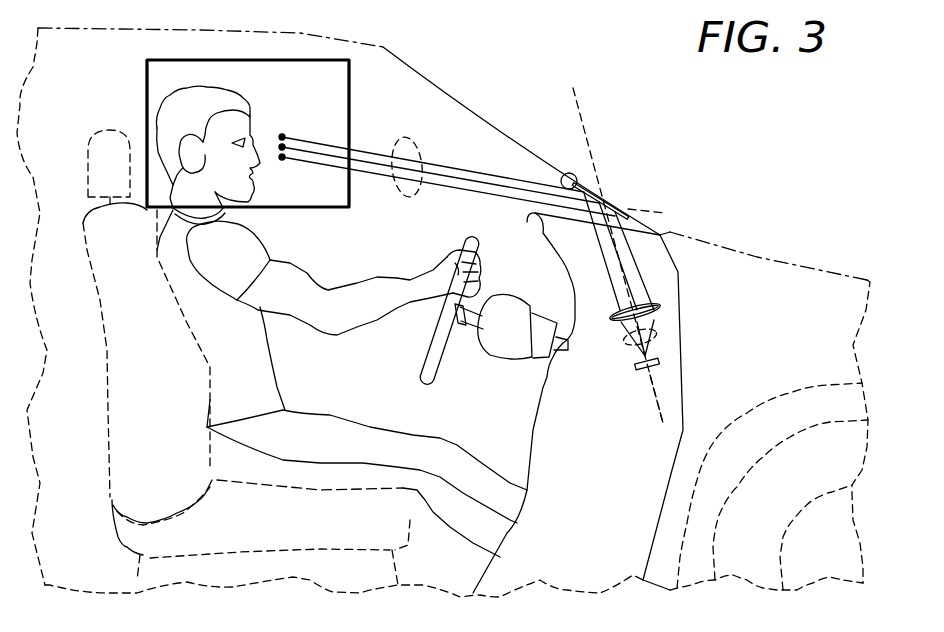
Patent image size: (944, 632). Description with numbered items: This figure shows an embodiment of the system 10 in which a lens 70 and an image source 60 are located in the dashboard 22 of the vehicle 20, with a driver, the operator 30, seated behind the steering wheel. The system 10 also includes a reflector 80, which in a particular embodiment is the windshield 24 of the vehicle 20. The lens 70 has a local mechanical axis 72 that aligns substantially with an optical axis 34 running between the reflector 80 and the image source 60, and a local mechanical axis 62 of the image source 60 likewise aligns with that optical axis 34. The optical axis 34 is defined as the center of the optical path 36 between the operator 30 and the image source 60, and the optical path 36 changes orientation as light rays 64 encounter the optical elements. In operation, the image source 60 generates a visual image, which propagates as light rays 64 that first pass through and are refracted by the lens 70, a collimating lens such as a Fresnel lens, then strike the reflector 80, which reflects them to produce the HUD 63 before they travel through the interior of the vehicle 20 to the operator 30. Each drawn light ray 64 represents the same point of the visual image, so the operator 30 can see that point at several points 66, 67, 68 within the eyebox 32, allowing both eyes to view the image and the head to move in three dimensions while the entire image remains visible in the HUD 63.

The system 10 is at (720, 126).
The vehicle 20 is at (800, 266).
The dashboard 22 is at (528, 425).
The windshield 24 is at (478, 112).
The operator 30 is at (147, 124).
The eyebox 32 is at (313, 210).
The optical axis 34 is at (662, 210).
The optical path 36 is at (402, 197).
The image source 60 is at (634, 366).
The local mechanical axis 62 is at (658, 400).
The HUD 63 is at (571, 174).
The light rays 64 is at (623, 342).
The point 66 is at (284, 159).
The point 67 is at (280, 135).
The point 68 is at (285, 137).
The lens 70 is at (607, 316).
The local mechanical axis 72 is at (584, 124).
The reflector 80 is at (624, 212).